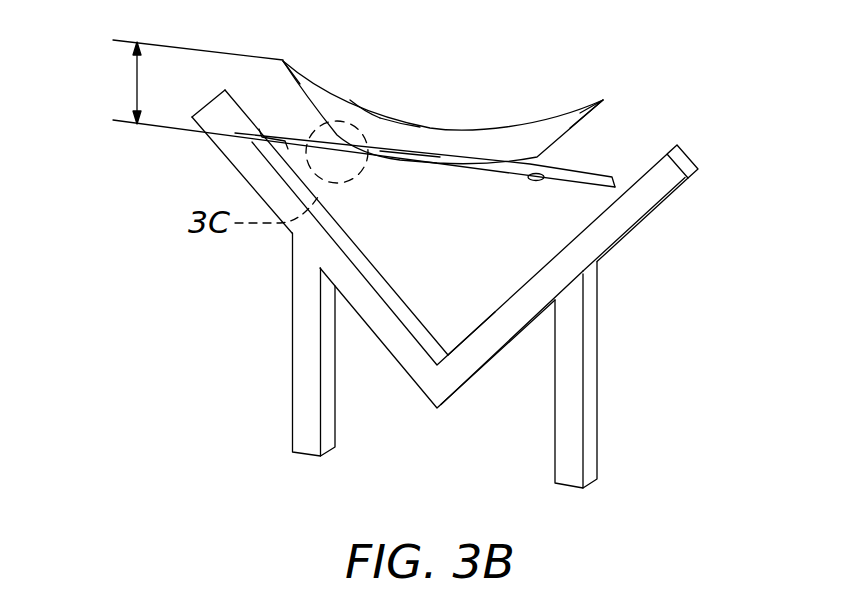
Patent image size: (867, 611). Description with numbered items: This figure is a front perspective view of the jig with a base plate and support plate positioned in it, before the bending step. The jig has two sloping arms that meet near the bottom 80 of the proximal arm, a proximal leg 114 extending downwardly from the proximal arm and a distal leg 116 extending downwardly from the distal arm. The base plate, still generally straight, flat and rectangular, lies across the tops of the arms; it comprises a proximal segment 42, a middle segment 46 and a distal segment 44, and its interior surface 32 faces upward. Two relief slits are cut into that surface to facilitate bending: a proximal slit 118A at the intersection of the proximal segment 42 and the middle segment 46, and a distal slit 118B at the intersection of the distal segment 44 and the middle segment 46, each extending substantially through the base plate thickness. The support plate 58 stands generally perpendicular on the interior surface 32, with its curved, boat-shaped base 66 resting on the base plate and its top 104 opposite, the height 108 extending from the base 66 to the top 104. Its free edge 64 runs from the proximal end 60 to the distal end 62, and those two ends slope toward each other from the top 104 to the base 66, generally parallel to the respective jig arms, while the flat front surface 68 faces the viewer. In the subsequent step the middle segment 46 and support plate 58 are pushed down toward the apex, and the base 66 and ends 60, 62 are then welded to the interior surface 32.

The base plate interior surface 32 is at (538, 165).
The proximal segment 42 is at (275, 138).
The distal segment 44 is at (613, 180).
The middle segment 46 is at (488, 172).
The support plate 58 is at (440, 128).
The support plate proximal end 60 is at (316, 94).
The support plate distal end 62 is at (603, 104).
The free edge 64 is at (377, 110).
The support plate base 66 is at (411, 160).
The front surface 68 is at (492, 142).
The proximal arm bottom 80 is at (415, 368).
The support plate top 104 is at (400, 122).
The height 108 is at (133, 84).
The proximal leg 114 is at (303, 388).
The distal leg 116 is at (568, 418).
The proximal slit 118A is at (360, 163).
The distal slit 118B is at (528, 178).